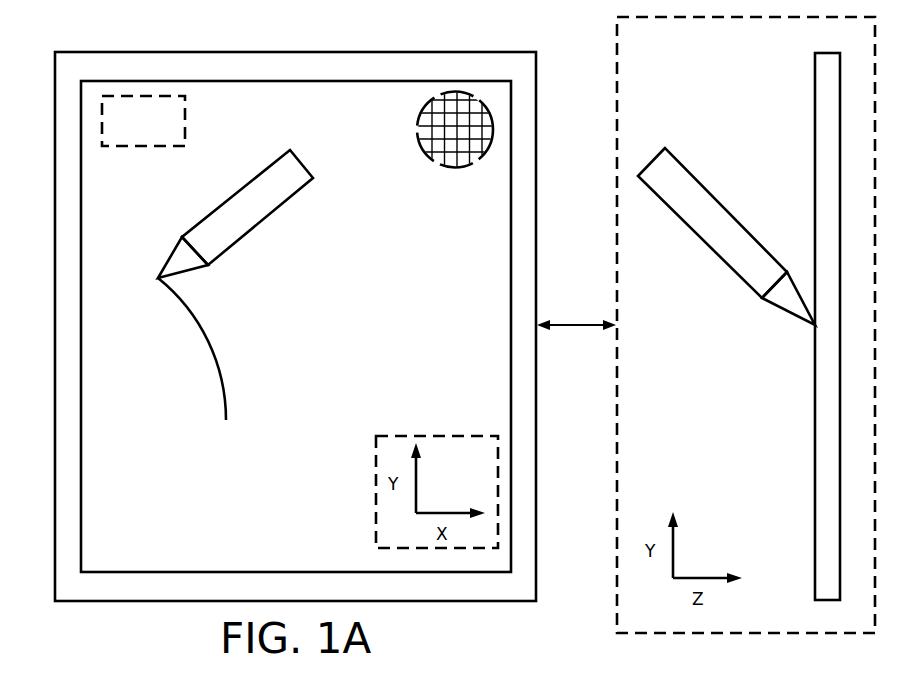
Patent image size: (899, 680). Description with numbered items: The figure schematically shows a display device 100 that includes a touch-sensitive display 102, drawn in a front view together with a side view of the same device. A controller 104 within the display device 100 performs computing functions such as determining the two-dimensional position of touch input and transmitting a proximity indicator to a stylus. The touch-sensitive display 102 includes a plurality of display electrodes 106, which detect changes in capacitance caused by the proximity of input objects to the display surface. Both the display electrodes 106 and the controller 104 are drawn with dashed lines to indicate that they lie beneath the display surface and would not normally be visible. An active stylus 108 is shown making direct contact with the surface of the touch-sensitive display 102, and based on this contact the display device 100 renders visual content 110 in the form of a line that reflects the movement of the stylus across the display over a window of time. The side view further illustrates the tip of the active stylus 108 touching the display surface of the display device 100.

The display device 100 is at (330, 37).
The touch-sensitive display 102 is at (133, 80).
The controller 104 is at (143, 121).
The display electrodes 106 is at (418, 128).
The active stylus 108 is at (255, 175).
The visual content 110 is at (223, 368).